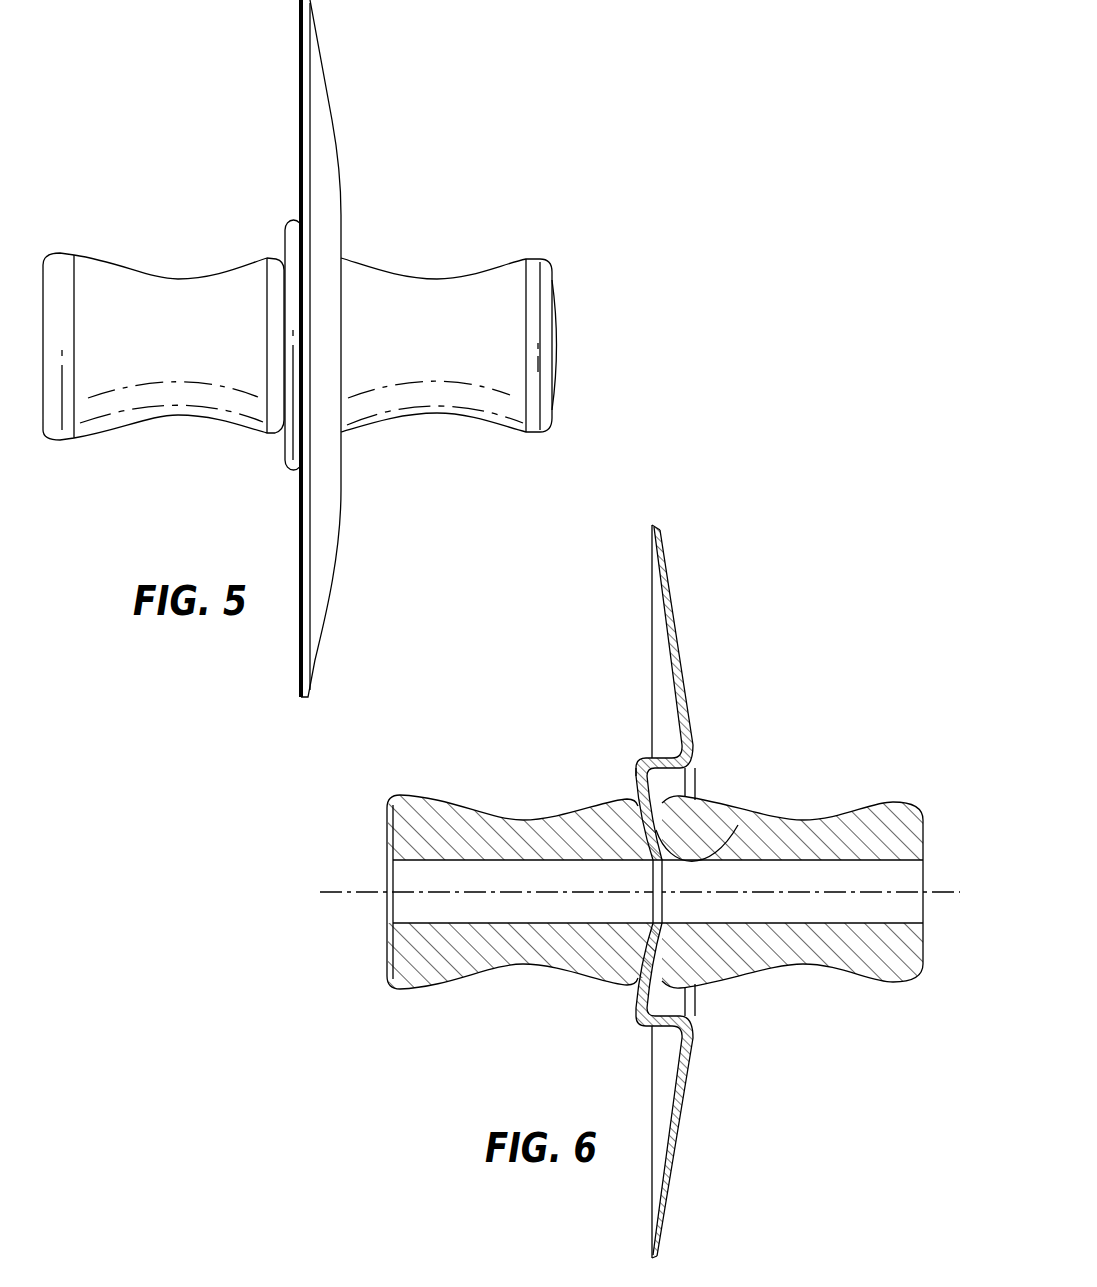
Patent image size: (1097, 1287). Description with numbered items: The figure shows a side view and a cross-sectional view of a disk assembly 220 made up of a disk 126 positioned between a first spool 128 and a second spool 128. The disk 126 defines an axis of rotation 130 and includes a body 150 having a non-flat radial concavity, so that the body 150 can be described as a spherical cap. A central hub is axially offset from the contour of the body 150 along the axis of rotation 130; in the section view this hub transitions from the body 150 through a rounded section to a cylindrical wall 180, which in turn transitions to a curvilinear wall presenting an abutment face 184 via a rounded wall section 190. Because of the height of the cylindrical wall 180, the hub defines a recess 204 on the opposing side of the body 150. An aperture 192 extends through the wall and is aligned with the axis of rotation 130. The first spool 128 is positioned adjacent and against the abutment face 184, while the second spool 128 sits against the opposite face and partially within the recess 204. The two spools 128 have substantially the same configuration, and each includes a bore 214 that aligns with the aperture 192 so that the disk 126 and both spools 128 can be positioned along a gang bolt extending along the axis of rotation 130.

In FIG. 5, the disk assembly 220 is at (427, 158).
In FIG. 6, the disk assembly 220 is at (770, 646).
In FIG. 5, the disk 126 is at (299, 95).
In FIG. 6, the disk 126 is at (650, 585).
In FIG. 5, the body 150 is at (310, 25).
In FIG. 6, the body 150 is at (663, 542).
In FIG. 5, the spool 128 is at (111, 427).
In FIG. 6, the spool 128 is at (442, 978).
In FIG. 5, the rounded wall section 190 is at (278, 456).
In FIG. 6, the axis of rotation 130 is at (360, 887).
In FIG. 6, the abutment face 184 is at (635, 797).
In FIG. 6, the recess 204 is at (697, 778).
In FIG. 6, the aperture 192 is at (738, 825).
In FIG. 6, the cylindrical wall 180 is at (650, 1071).
In FIG. 6, the bore 214 is at (385, 930).